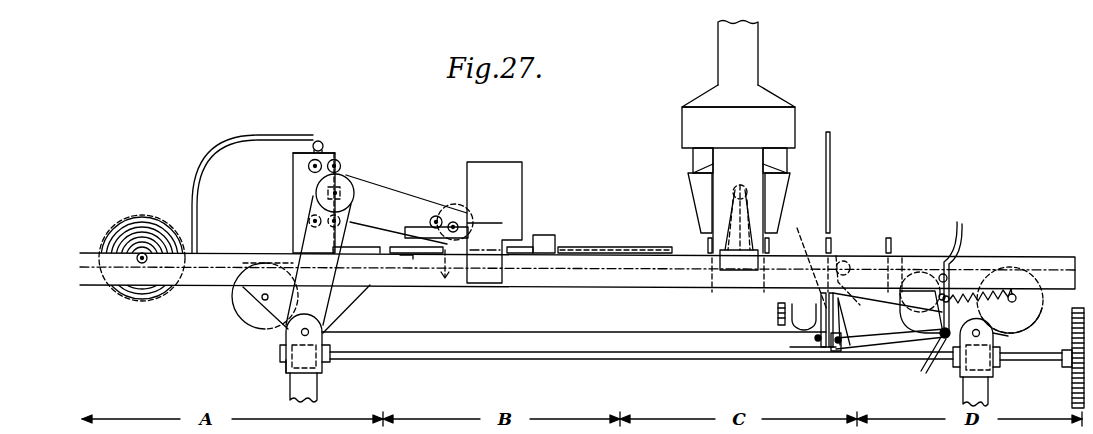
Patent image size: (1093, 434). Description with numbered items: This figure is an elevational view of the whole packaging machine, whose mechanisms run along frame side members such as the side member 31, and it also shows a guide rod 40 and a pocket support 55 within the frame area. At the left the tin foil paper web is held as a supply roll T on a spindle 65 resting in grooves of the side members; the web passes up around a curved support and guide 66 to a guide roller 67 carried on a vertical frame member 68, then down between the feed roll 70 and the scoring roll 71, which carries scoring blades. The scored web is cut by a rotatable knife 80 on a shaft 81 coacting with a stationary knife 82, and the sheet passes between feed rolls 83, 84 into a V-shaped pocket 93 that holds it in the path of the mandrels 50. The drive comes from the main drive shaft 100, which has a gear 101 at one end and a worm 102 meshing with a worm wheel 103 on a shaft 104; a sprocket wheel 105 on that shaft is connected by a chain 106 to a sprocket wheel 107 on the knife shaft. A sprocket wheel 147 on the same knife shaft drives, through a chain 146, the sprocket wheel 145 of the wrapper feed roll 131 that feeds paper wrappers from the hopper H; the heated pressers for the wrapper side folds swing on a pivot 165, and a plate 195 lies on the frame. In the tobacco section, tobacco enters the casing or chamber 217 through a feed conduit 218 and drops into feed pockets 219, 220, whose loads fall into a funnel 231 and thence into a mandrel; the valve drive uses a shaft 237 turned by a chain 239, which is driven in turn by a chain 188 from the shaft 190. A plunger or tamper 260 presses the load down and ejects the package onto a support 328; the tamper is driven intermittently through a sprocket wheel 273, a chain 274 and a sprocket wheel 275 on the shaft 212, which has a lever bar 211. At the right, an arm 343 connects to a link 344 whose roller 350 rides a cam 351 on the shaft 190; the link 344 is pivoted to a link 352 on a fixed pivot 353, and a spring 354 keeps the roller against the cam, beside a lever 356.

The side member 31 is at (528, 288).
The guide rod 40 is at (563, 333).
The spindle 65 is at (134, 272).
The supply roll T is at (126, 224).
The curved support and guide 66 is at (198, 206).
The guide roller 67 is at (321, 140).
The vertical frame member 68 is at (293, 176).
The scoring roll 71 is at (293, 163).
The feed roll 70 is at (339, 153).
The stationary knife 82 is at (312, 201).
The feed roll 83 is at (310, 222).
The rotatable knife 80 is at (355, 195).
The shaft 81 is at (337, 190).
The feed roll 84 is at (342, 240).
The V-shaped pocket 93 is at (338, 262).
The chain 106 is at (347, 298).
The sprocket wheel 147 is at (349, 176).
The sprocket wheel 107 is at (372, 184).
The chain 146 is at (411, 197).
The sprocket wheel 145 is at (440, 209).
The feed roll 131 is at (459, 222).
The hopper H is at (509, 162).
The mandrel 50 is at (408, 257).
The pivot 165 is at (546, 245).
The plate 195 is at (583, 247).
The lever disc 55 is at (243, 303).
The shaft 104 is at (310, 316).
The sprocket wheel 105 is at (283, 326).
The worm wheel 103 is at (288, 347).
The worm 102 is at (290, 372).
The main drive shaft 100 is at (1052, 362).
The feed conduit 218 is at (760, 55).
The casing or chamber 217 is at (684, 127).
The feed pocket 219 is at (693, 163).
The feed pocket 220 is at (787, 165).
The funnel 231 is at (698, 190).
The shaft 237 is at (778, 200).
The chain 239 is at (781, 252).
The plunger or tamper 260 is at (833, 196).
The sprocket wheel 273 is at (836, 256).
The spring 354 is at (998, 287).
The link 352 is at (958, 287).
The chain 274 is at (993, 260).
The fixed pivot 353 is at (941, 277).
The lever bar 211 is at (958, 222).
The shaft 212 is at (1037, 300).
The sprocket wheel 275 is at (1023, 318).
The roller 350 is at (942, 338).
The link 344 is at (882, 348).
The lever 356 is at (910, 315).
The chain 188 is at (856, 318).
The support 328 is at (826, 344).
The arm 343 is at (836, 351).
The shaft 190 is at (968, 341).
The cam 351 is at (1002, 336).
The gear 101 is at (1068, 397).